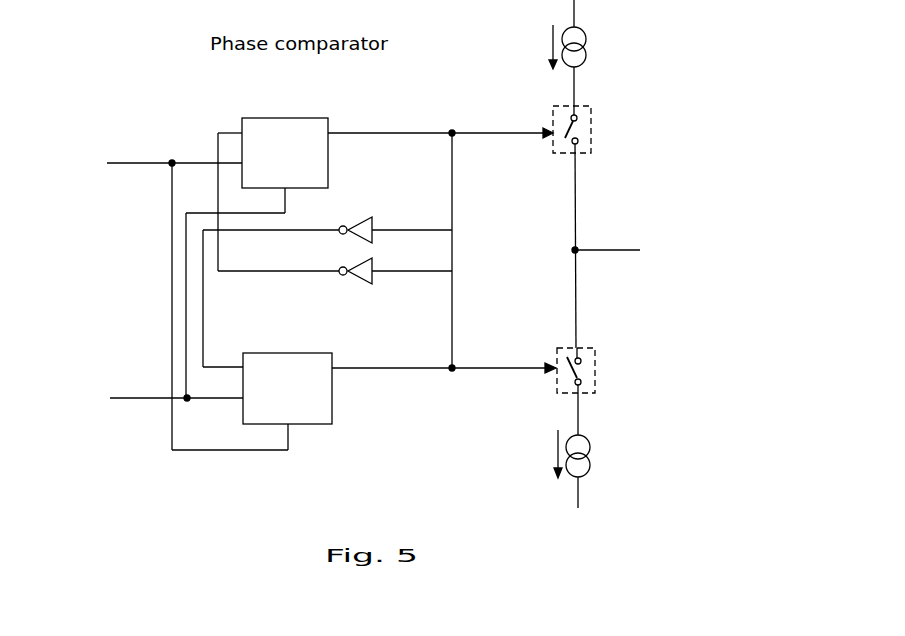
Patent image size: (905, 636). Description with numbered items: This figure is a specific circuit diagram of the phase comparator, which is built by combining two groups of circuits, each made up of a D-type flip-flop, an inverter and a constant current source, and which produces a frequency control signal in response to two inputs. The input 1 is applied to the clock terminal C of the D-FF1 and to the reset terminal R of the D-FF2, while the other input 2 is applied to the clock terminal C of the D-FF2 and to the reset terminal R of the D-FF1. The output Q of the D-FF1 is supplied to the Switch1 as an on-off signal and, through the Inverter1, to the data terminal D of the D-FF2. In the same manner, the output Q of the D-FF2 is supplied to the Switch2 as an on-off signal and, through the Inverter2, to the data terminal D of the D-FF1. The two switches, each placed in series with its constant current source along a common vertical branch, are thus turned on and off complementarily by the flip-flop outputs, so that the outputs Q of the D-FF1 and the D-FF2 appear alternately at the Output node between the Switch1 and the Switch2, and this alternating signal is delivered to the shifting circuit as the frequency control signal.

The input 1 is at (140, 164).
The input 2 is at (140, 399).
The D-type flip-flop D-FF1 is at (285, 142).
The D-type flip-flop D-FF2 is at (287, 378).
The inverter Inverter1 is at (390, 221).
The inverter Inverter2 is at (391, 290).
The switch Switch1 is at (617, 129).
The switch Switch2 is at (620, 370).
The output Output is at (642, 253).